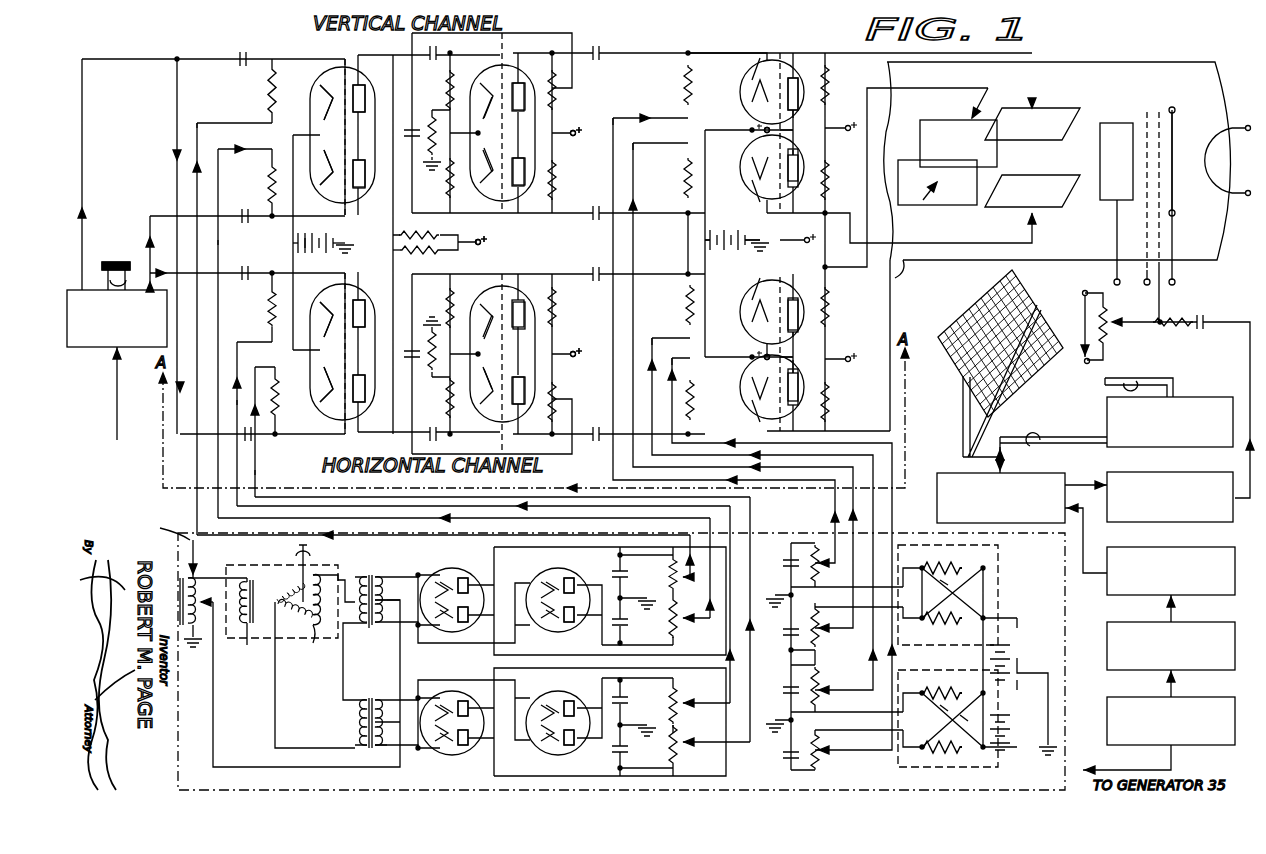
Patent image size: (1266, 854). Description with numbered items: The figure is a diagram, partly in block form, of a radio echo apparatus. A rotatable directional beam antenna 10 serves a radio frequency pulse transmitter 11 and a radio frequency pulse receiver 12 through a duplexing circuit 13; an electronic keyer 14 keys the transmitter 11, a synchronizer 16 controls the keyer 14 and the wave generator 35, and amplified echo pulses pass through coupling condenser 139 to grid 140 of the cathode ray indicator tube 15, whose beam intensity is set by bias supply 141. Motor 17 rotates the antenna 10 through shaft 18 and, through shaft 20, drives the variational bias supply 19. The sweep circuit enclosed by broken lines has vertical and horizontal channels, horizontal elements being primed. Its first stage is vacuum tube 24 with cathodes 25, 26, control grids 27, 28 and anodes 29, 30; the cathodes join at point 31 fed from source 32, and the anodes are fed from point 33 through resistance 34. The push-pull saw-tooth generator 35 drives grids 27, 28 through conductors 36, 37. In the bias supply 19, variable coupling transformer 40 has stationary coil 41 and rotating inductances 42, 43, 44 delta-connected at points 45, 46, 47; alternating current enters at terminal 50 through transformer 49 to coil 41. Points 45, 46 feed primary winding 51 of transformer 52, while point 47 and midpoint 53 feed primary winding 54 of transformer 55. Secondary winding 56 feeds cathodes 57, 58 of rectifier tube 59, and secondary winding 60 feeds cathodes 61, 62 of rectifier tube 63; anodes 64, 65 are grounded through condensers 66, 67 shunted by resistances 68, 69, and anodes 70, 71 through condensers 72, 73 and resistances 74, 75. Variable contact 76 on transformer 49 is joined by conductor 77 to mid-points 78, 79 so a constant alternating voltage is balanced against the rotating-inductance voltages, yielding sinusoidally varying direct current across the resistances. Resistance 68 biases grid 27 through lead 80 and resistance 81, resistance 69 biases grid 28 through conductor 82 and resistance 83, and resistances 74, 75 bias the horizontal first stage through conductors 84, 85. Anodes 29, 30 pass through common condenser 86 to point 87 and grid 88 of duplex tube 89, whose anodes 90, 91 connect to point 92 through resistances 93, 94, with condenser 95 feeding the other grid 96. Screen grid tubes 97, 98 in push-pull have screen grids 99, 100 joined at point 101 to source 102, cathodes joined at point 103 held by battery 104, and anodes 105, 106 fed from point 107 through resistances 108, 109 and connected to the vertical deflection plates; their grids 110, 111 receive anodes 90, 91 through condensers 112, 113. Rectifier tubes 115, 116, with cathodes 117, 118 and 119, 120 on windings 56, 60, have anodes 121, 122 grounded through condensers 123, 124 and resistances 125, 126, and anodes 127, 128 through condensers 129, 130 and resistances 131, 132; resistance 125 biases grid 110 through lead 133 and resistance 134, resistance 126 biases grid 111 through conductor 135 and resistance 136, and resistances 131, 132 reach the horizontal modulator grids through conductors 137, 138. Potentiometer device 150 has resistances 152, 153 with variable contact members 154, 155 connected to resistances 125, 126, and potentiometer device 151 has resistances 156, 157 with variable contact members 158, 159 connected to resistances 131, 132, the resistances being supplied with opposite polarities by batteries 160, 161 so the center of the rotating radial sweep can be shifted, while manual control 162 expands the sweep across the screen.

The directive antenna 10 is at (955, 374).
The pulse transmitter 11 is at (1107, 594).
The pulse receiver 12 is at (1185, 474).
The duplexing circuit 13 is at (944, 470).
The electronic keyer 14 is at (1107, 648).
The cathode ray tube 15 is at (1057, 174).
The synchronizer 16 is at (124, 396).
The motor 17 is at (1214, 399).
The antenna drive shaft 18 is at (1040, 430).
The sweep circuit unit 19 is at (900, 526).
The shaft 20 is at (1142, 376).
The vertical channel amplifier tube 24 is at (342, 120).
The cathode 25 is at (312, 81).
The cathode 26 is at (314, 189).
The grid 27 is at (330, 116).
The grid 28 is at (344, 152).
The anode 29 is at (369, 85).
The anode 30 is at (367, 185).
The battery lead 31 is at (292, 242).
The battery 32 is at (320, 238).
The positive terminal 33 is at (480, 244).
The load resistor 34 is at (440, 233).
The push-pull saw-tooth generator 35 is at (96, 348).
The coupling condenser 36 is at (216, 48).
The coupling condenser 37 is at (235, 206).
The phase shifter 40 is at (257, 645).
The input coil 41 is at (240, 647).
The stator coil 42 is at (292, 591).
The stator coil 43 is at (320, 608).
The stator coil 44 is at (300, 620).
The rotor coil 45 is at (310, 575).
The lead 46 is at (315, 637).
The lead 47 is at (275, 605).
The input transformer primary 49 is at (198, 594).
The A.C. input 50 is at (197, 553).
The transformer 51 is at (367, 577).
The transformer core 52 is at (369, 628).
The primary winding 53 is at (360, 601).
The transformer 54 is at (356, 720).
The transformer core 55 is at (370, 698).
The secondary winding 56 is at (382, 577).
The cathode 57 is at (556, 575).
The cathode 58 is at (552, 628).
The rectifier tube 59 is at (589, 602).
The secondary winding 60 is at (382, 701).
The cathode 61 is at (555, 701).
The cathode 62 is at (552, 750).
The rectifier tube 63 is at (589, 726).
The anode 64 is at (569, 577).
The anode 65 is at (568, 625).
The filter condenser 66 is at (624, 577).
The filter condenser 67 is at (624, 624).
The potentiometer 68 is at (668, 580).
The potentiometer 69 is at (668, 624).
The anode 70 is at (569, 700).
The anode 71 is at (567, 752).
The filter condenser 72 is at (626, 700).
The filter condenser 73 is at (624, 751).
The potentiometer 74 is at (668, 708).
The potentiometer 75 is at (668, 750).
The center tap 76 is at (198, 608).
The lead 77 is at (250, 762).
The center tap 78 is at (382, 600).
The center tap 79 is at (390, 737).
The bias lead 80 is at (206, 118).
The grid resistor 81 is at (254, 91).
The bias lead 82 is at (218, 245).
The grid resistor 83 is at (259, 185).
The bias lead 84 is at (240, 352).
The bias lead 85 is at (256, 467).
The coupling condenser 86 is at (424, 64).
The grid resistor 87 is at (460, 117).
The grid 88 is at (488, 109).
The amplifier tube 89 is at (502, 119).
The anode 90 is at (527, 83).
The anode 91 is at (527, 185).
The positive terminal 92 is at (575, 144).
The load resistor 93 is at (564, 90).
The load resistor 94 is at (566, 180).
The cathode resistor 95 is at (414, 133).
The grid 96 is at (490, 160).
The output tube 97 is at (757, 92).
The output tube 98 is at (757, 167).
The anode lead 99 is at (807, 113).
The anode lead 100 is at (810, 143).
The positive terminal 101 is at (801, 128).
The positive terminal 102 is at (809, 237).
The cathode junction 103 is at (741, 124).
The battery 104 is at (734, 236).
The anode 105 is at (802, 82).
The anode 106 is at (804, 181).
The positive terminal 107 is at (849, 138).
The load resistor 108 is at (840, 93).
The load resistor 109 is at (841, 180).
The cathode 110 is at (744, 66).
The cathode 111 is at (743, 193).
The coupling condenser 112 is at (613, 59).
The coupling condenser 113 is at (582, 204).
The rectifier tube 115 is at (480, 598).
The rectifier tube 116 is at (480, 721).
The cathode 117 is at (448, 576).
The cathode 118 is at (448, 627).
The cathode 119 is at (448, 699).
The cathode 120 is at (448, 750).
The anode 121 is at (466, 581).
The anode 122 is at (466, 623).
The condenser 123 is at (784, 563).
The condenser 124 is at (785, 637).
The potentiometer 125 is at (820, 572).
The potentiometer 126 is at (822, 637).
The anode 127 is at (466, 704).
The anode 128 is at (466, 748).
The condenser 129 is at (784, 689).
The condenser 130 is at (785, 761).
The potentiometer 131 is at (822, 696).
The potentiometer 132 is at (822, 762).
The centering lead 133 is at (620, 110).
The grid resistor 134 is at (668, 85).
The centering lead 135 is at (652, 148).
The grid resistor 136 is at (671, 178).
The centering lead 137 is at (672, 338).
The centering lead 138 is at (672, 366).
The condenser 139 is at (1208, 324).
The cathode ray tube grid 140 is at (1160, 134).
The bias potentiometer 141 is at (1110, 320).
The keying network 150 is at (996, 570).
The keying network 151 is at (912, 770).
The junction 152 is at (930, 592).
The cross connection 153 is at (968, 604).
The resistor 154 is at (953, 564).
The resistor 155 is at (952, 630).
The cross connection 156 is at (944, 712).
The cross connection 157 is at (964, 718).
The resistor 158 is at (953, 694).
The resistor 159 is at (952, 752).
The battery 160 is at (1014, 628).
The battery 161 is at (1022, 704).
The motor coupling 162 is at (110, 262).